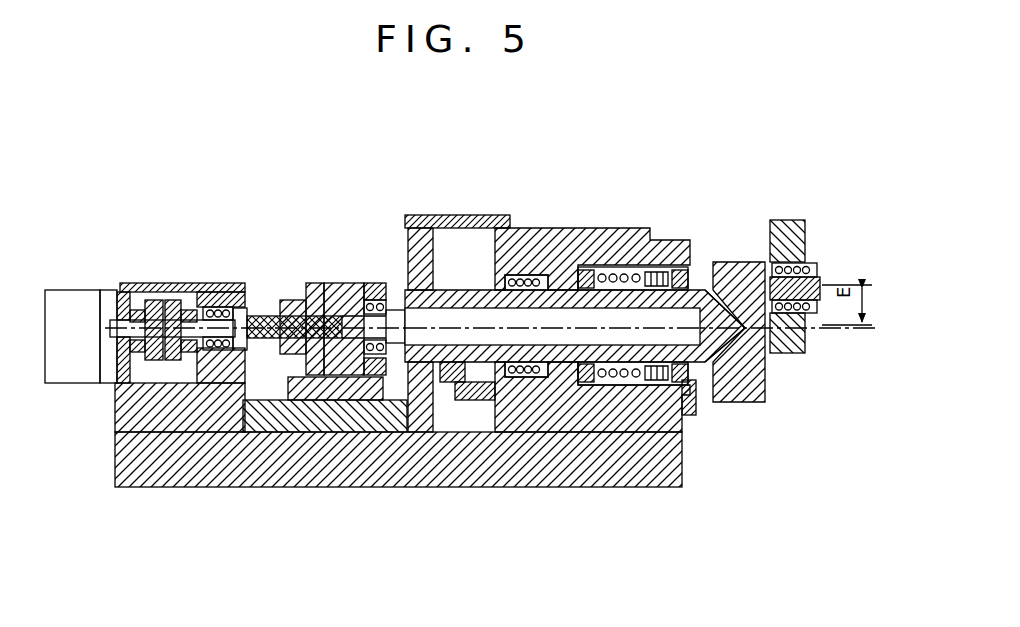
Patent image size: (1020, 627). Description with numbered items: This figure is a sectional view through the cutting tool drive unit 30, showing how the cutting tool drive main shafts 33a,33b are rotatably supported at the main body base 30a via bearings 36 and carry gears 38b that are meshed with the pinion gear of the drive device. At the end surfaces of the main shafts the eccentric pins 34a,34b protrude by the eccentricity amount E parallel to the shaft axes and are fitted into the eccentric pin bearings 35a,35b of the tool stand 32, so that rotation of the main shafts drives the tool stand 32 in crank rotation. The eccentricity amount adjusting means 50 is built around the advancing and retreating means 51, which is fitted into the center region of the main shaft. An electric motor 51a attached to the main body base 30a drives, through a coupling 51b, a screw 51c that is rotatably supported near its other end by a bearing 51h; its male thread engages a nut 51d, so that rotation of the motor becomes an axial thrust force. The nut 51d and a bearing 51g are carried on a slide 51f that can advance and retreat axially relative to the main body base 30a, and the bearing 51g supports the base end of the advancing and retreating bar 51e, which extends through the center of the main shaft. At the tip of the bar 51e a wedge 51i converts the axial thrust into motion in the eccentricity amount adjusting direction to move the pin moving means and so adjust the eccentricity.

The cutting tool drive unit 30 is at (548, 212).
The main body base 30a is at (518, 465).
The tool stand 32 is at (790, 222).
The cutting tool drive main shafts 33a,33b is at (622, 375).
The eccentric pins 34a,34b is at (826, 280).
The eccentric pin bearings 35a,35b is at (787, 353).
The bearings 36 is at (652, 283).
The gears 38b is at (462, 385).
The eccentricity amount adjusting means 50 is at (255, 330).
The advancing and retreating means 51 is at (182, 278).
The electric motor 51a is at (75, 290).
The coupling 51b is at (186, 300).
The screw 51c is at (240, 308).
The nut 51d is at (315, 283).
The advancing and retreating bar 51e is at (688, 395).
The slide 51f is at (333, 410).
The bearing 51g is at (371, 283).
The bearing 51h is at (220, 305).
The wedge 51i is at (738, 403).